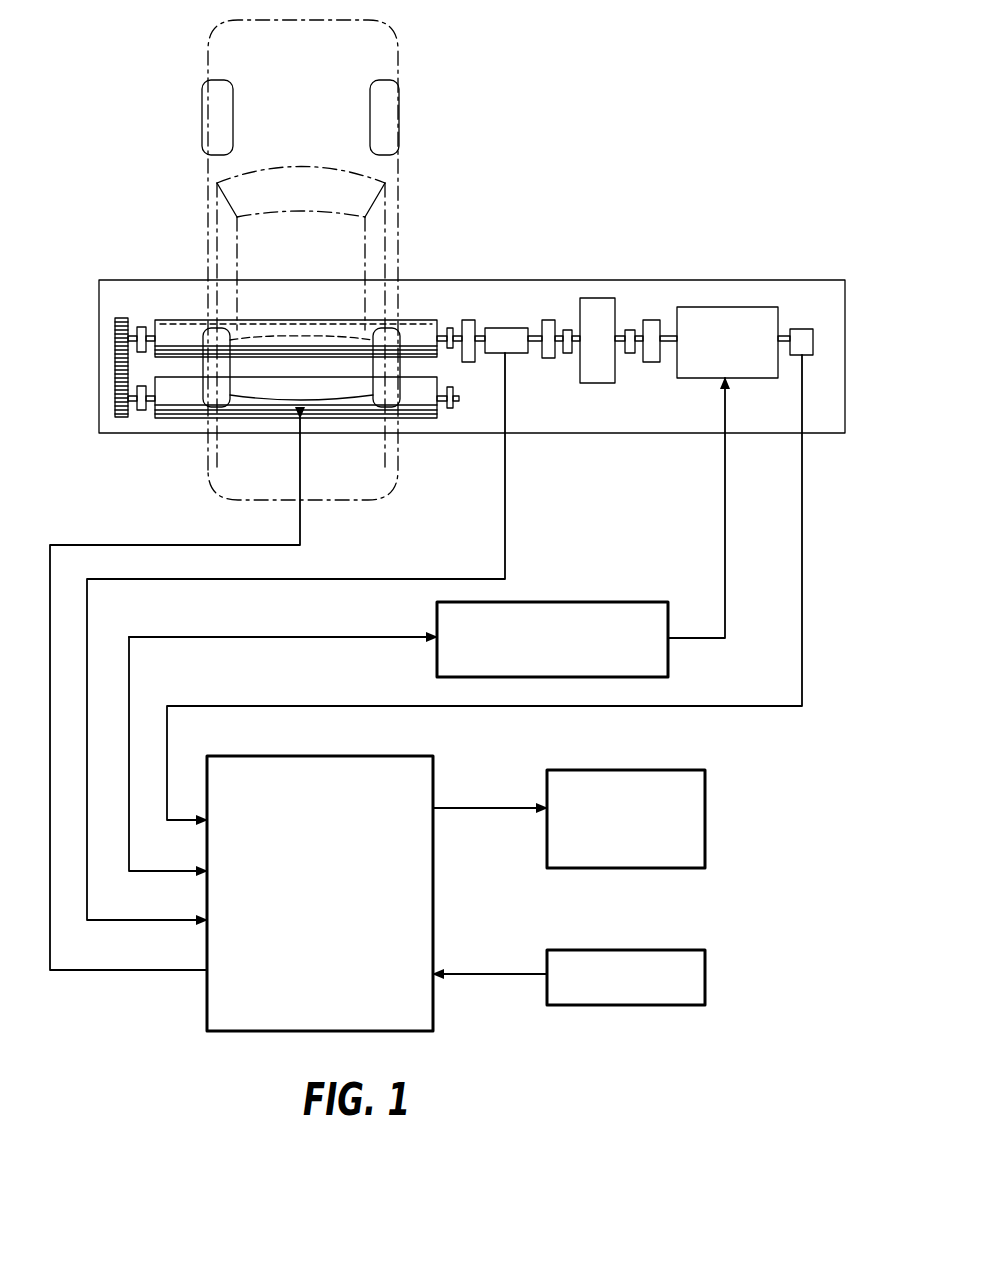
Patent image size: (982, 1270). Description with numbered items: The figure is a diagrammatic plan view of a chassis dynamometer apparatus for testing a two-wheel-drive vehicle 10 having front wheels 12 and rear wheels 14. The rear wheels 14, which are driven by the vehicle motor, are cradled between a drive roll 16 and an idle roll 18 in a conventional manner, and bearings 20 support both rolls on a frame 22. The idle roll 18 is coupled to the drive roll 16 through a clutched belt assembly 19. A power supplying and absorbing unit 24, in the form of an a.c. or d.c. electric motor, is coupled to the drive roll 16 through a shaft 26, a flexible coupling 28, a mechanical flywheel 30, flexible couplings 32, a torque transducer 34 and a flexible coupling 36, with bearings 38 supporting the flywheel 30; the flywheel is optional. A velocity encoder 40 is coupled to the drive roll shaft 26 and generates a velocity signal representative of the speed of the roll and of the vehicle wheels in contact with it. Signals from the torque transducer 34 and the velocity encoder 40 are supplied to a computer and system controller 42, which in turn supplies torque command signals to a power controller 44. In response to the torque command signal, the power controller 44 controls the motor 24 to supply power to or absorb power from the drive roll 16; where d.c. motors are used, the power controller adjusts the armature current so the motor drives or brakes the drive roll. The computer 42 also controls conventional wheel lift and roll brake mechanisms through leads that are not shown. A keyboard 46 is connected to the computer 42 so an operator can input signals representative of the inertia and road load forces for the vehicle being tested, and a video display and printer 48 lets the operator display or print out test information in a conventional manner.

The vehicle 10 is at (397, 240).
The front wheels 12 is at (202, 106).
The rear wheels 14 is at (218, 403).
The drive roll 16 is at (437, 321).
The idle roll 18 is at (183, 412).
The clutched belt assembly 19 is at (115, 365).
The bearings 20 is at (141, 327).
The frame 22 is at (593, 298).
The power supplying and absorbing unit 24 is at (742, 307).
The shaft 26 is at (670, 336).
The flexible coupling 28 is at (652, 320).
The mechanical flywheel 30 is at (603, 383).
The flexible couplings 32 is at (548, 358).
The torque transducer 34 is at (507, 328).
The flexible coupling 36 is at (470, 320).
The bearings 38 is at (568, 330).
The velocity encoder 40 is at (803, 329).
The computer and system controller 42 is at (325, 756).
The power controller 44 is at (612, 602).
The keyboard 46 is at (615, 950).
The video display and printer 48 is at (612, 770).